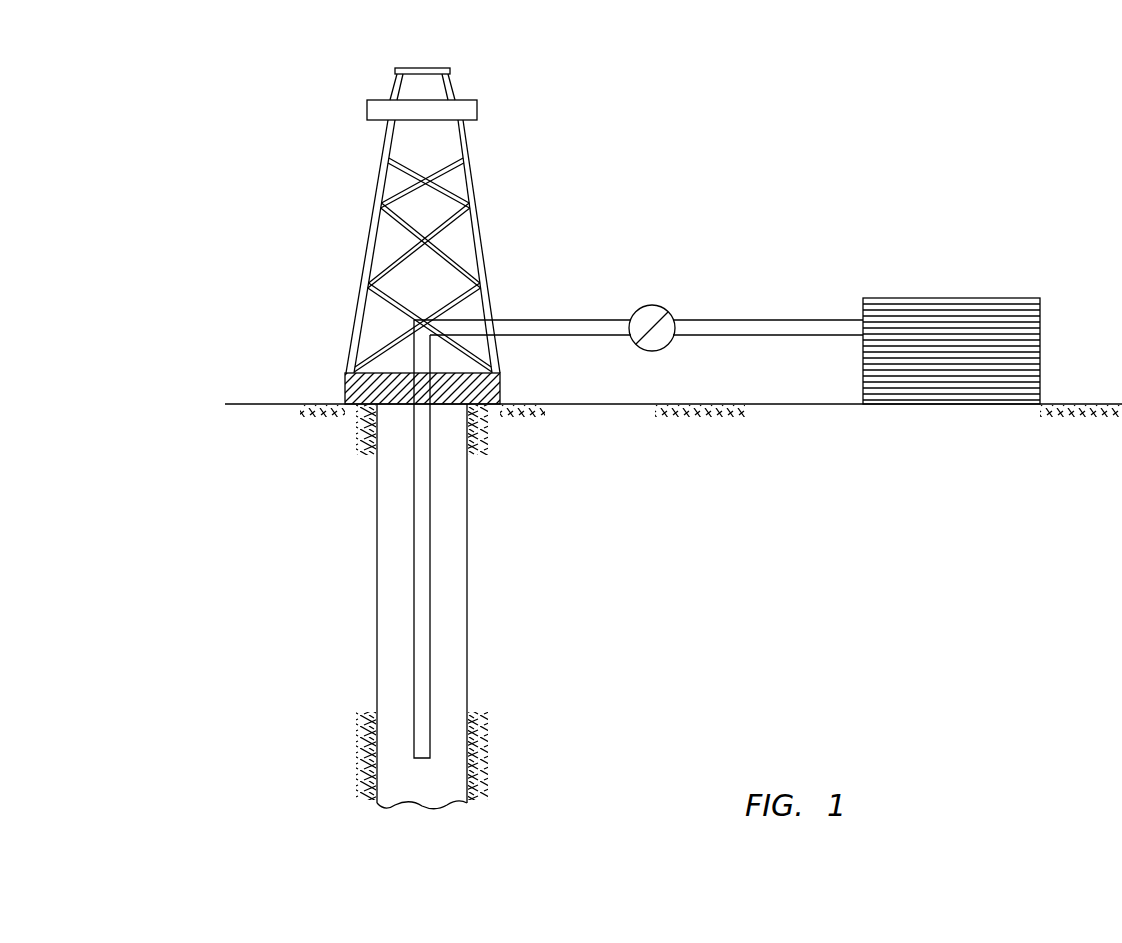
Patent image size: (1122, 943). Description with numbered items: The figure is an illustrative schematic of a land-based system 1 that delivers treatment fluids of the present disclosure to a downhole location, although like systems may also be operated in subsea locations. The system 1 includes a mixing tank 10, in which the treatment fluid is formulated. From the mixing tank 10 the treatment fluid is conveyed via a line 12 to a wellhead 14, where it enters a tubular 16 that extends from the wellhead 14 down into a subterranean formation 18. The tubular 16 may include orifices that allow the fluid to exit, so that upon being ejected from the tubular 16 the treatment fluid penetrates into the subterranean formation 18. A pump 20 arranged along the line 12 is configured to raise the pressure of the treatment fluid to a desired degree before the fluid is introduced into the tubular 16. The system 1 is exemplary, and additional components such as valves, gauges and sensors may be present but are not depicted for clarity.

The system 1 is at (222, 97).
The mixing tank 10 is at (1028, 297).
The line 12 is at (561, 320).
The wellhead 14 is at (345, 388).
The tubular 16 is at (431, 524).
The subterranean formation 18 is at (298, 618).
The pump 20 is at (662, 305).